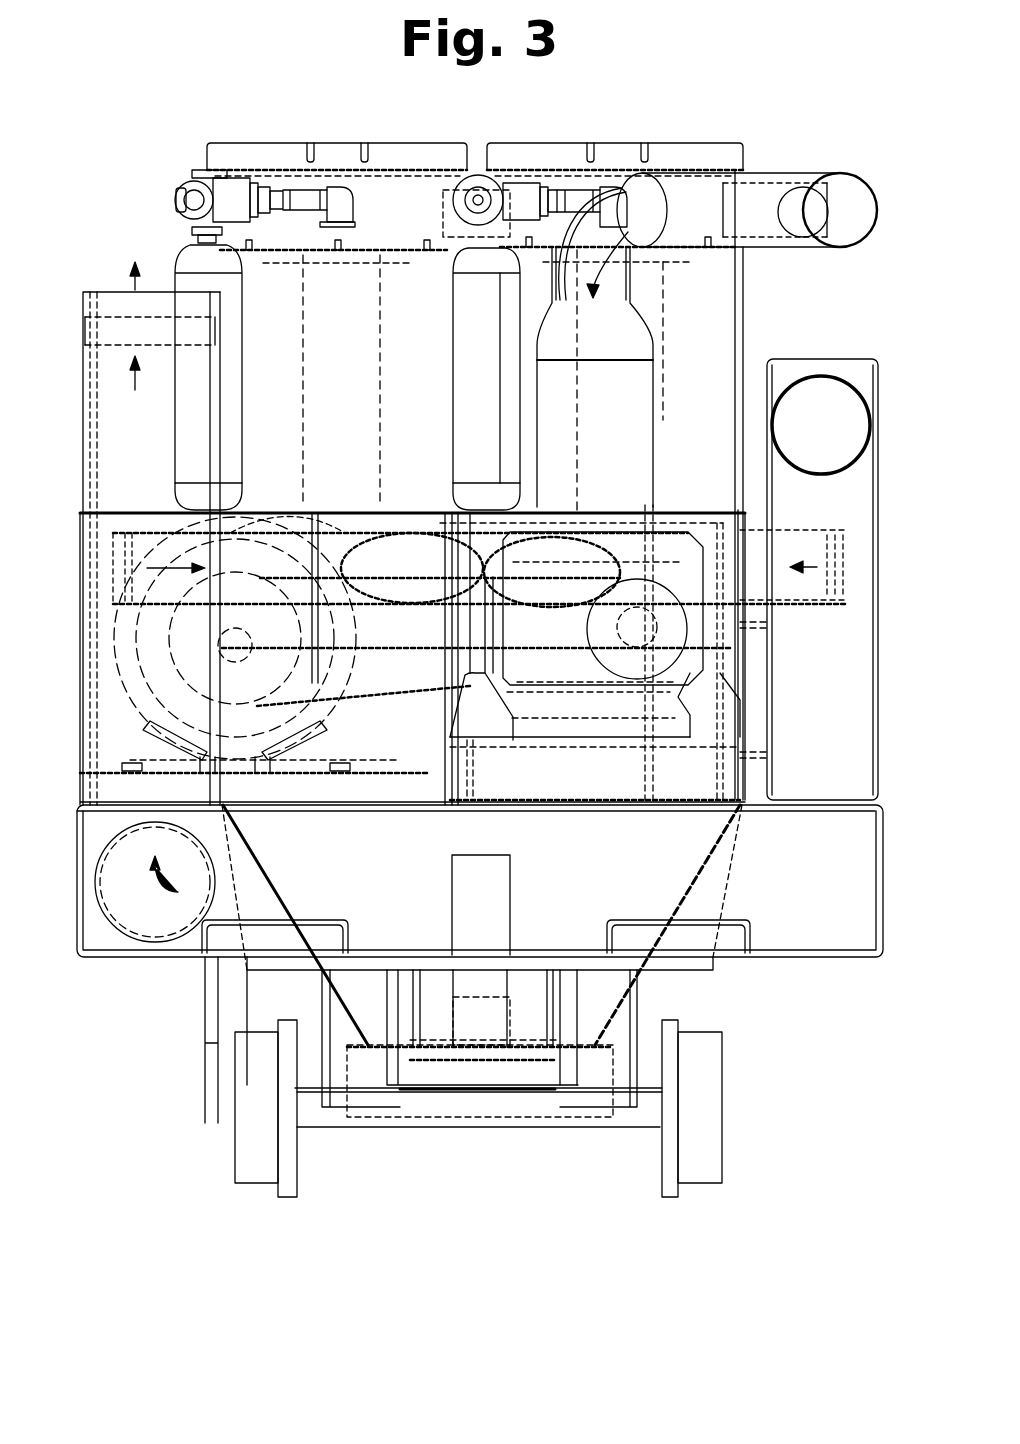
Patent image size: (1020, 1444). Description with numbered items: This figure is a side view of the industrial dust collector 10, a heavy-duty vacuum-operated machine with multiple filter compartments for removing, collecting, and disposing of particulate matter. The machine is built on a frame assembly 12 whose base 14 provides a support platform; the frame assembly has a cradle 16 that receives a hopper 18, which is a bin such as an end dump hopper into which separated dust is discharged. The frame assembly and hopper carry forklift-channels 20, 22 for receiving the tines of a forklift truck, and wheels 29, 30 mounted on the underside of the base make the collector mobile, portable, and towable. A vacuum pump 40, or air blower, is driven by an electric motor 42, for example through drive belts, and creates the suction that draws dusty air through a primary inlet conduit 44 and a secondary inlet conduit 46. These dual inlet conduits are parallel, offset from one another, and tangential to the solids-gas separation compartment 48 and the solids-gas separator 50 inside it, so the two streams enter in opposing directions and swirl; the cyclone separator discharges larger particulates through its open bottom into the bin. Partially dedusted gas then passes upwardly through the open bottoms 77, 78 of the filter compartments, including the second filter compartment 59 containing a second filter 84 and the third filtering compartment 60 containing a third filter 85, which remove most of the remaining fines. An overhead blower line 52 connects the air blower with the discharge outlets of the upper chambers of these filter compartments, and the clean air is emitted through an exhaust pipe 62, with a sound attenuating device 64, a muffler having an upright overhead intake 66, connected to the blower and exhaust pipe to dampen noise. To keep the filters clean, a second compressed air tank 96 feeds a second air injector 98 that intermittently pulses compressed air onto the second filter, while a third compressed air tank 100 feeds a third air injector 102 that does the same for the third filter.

The industrial dust collector 10 is at (745, 337).
The frame assembly 12 is at (743, 805).
The base 14 is at (447, 810).
The cradle 16 is at (610, 1047).
The hopper 18 is at (277, 870).
The forklift-channel 20 is at (327, 920).
The forklift-channel 22 is at (738, 920).
The wheel 29 is at (699, 1187).
The wheel 30 is at (262, 1185).
The vacuum pump 40 is at (683, 685).
The electric motor 42 is at (230, 645).
The primary inlet conduit 44 is at (337, 540).
The secondary inlet conduit 46 is at (640, 548).
The solids-gas separation compartment 48 is at (310, 505).
The solids-gas separator 50 is at (433, 515).
The overhead blower line 52 is at (780, 175).
The second filter compartment 59 is at (440, 258).
The third filtering compartment 60 is at (714, 250).
The exhaust pipe 62 is at (97, 455).
The sound attenuating device 64 is at (835, 960).
The upright overhead intake 66 is at (843, 358).
The open bottom 77 is at (270, 515).
The open bottom 78 is at (703, 510).
The second filter 84 is at (300, 363).
The third filter 85 is at (660, 328).
The second compressed air tank 96 is at (175, 470).
The second air injector 98 is at (245, 172).
The third compressed air tank 100 is at (575, 430).
The third air injector 102 is at (520, 178).